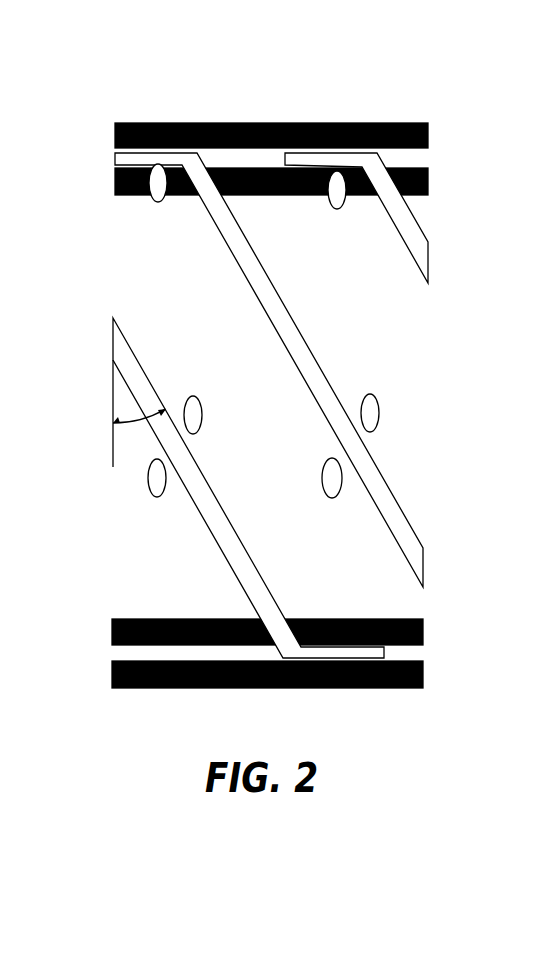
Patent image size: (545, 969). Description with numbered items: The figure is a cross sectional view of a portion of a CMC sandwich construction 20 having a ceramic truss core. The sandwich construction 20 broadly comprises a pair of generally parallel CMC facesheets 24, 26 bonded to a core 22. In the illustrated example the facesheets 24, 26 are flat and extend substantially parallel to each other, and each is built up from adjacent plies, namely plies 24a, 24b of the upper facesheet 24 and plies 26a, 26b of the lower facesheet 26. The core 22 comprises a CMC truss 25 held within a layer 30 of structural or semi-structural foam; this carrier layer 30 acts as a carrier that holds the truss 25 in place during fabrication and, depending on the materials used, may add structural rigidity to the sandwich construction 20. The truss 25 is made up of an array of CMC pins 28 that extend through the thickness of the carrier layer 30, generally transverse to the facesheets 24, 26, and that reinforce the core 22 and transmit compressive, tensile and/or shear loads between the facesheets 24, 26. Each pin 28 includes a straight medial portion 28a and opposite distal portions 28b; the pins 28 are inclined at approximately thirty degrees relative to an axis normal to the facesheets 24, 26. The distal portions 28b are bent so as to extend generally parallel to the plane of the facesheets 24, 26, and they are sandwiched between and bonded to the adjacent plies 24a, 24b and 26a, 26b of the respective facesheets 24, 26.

The CMC sandwich construction 20 is at (468, 84).
The core 22 is at (463, 217).
The CMC facesheet 24 is at (433, 107).
The ply 24a is at (282, 126).
The ply 24b is at (263, 173).
The CMC truss 25 is at (100, 242).
The CMC facesheet 26 is at (428, 613).
The ply 26a is at (372, 623).
The ply 26b is at (140, 688).
The CMC pin 28 is at (308, 377).
The medial portion 28a is at (266, 300).
The distal portion 28b is at (158, 180).
The carrier layer 30 is at (183, 311).